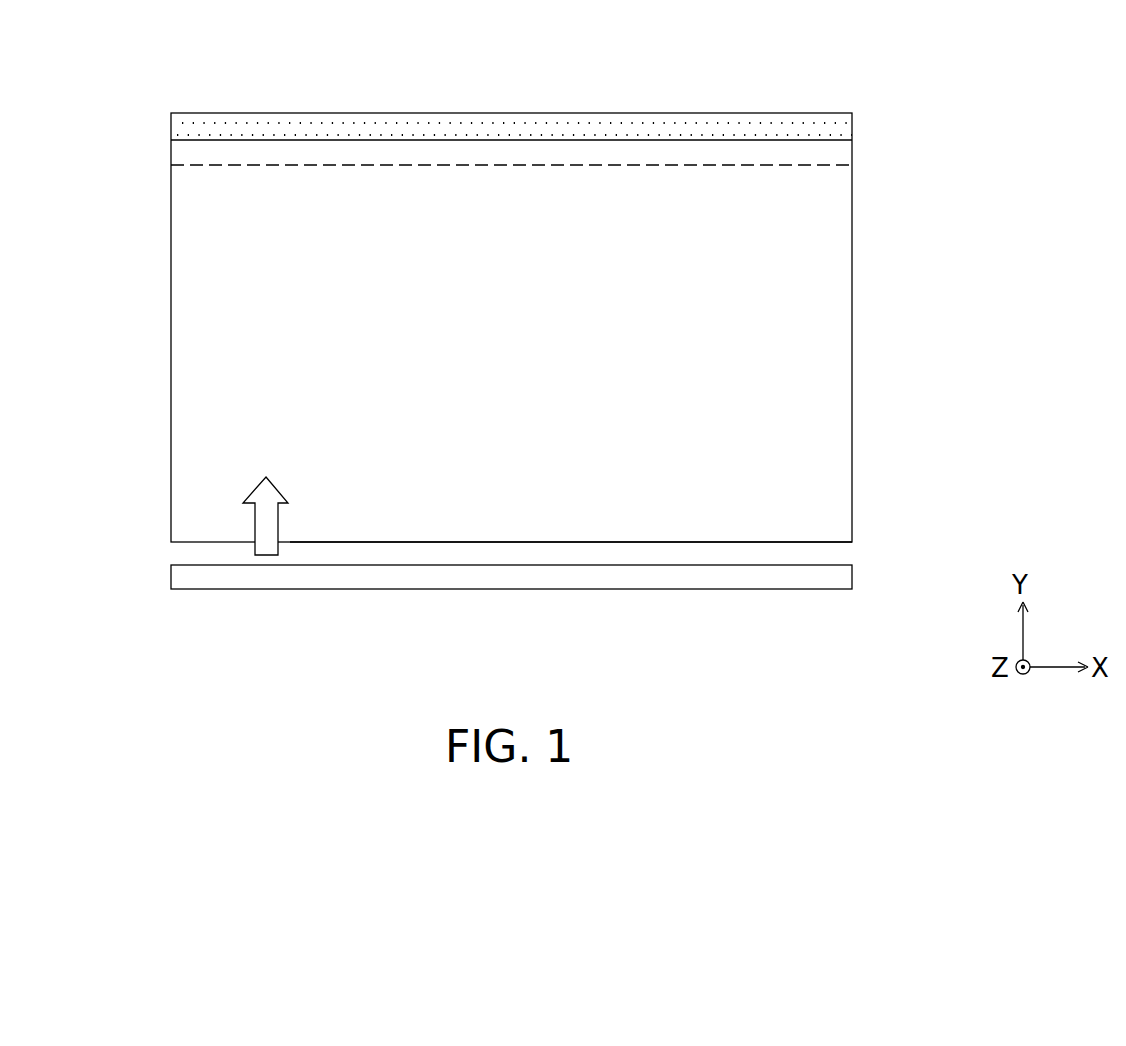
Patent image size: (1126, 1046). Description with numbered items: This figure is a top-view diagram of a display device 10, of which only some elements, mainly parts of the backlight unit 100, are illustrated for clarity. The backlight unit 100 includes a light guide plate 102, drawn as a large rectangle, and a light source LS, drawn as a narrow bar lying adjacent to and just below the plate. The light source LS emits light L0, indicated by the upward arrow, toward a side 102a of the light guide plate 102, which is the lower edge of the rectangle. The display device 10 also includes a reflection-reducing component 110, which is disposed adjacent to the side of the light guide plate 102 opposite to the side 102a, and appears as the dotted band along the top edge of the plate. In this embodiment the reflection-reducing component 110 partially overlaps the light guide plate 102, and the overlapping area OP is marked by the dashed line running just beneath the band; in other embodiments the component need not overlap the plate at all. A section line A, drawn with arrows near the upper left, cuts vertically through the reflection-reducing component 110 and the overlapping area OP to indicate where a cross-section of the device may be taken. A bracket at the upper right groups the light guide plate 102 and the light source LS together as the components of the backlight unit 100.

The display device 10 is at (133, 106).
The backlight unit 100 is at (1032, 35).
The light guide plate 102 is at (843, 453).
The side of the light guide plate 102a is at (711, 544).
The reflection-reducing component 110 is at (832, 118).
The overlapping area OP is at (763, 166).
The light source LS is at (843, 577).
The light L0 is at (272, 522).
The section line A-A' A is at (266, 90).